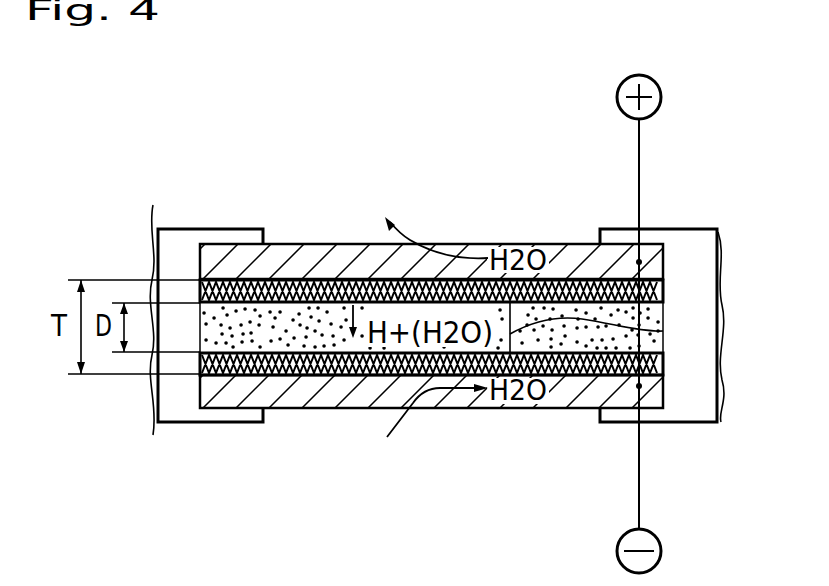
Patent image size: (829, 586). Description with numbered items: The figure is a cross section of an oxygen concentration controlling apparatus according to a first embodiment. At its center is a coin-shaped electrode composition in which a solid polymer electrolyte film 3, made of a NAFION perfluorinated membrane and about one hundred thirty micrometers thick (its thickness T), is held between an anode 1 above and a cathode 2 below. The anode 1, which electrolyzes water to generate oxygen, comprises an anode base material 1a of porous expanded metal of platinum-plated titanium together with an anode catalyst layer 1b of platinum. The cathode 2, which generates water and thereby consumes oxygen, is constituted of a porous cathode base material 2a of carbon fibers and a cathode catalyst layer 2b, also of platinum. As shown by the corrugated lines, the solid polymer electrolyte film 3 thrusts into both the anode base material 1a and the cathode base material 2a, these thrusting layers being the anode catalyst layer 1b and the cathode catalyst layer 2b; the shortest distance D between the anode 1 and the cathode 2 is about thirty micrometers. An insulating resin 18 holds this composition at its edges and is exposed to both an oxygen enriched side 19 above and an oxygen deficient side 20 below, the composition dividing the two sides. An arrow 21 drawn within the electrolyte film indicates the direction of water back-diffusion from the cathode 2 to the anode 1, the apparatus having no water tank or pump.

The anode 1 is at (464, 218).
The anode base material 1a is at (577, 262).
The anode catalyst layer 1b is at (281, 284).
The cathode 2 is at (467, 429).
The cathode base material 2a is at (580, 390).
The cathode catalyst layer 2b is at (296, 372).
The solid polymer electrolyte film 3 is at (233, 306).
The insulating resin 18 is at (193, 413).
The oxygen enriched side 19 is at (441, 158).
The oxygen deficient side 20 is at (445, 517).
The arrow 21 is at (663, 331).